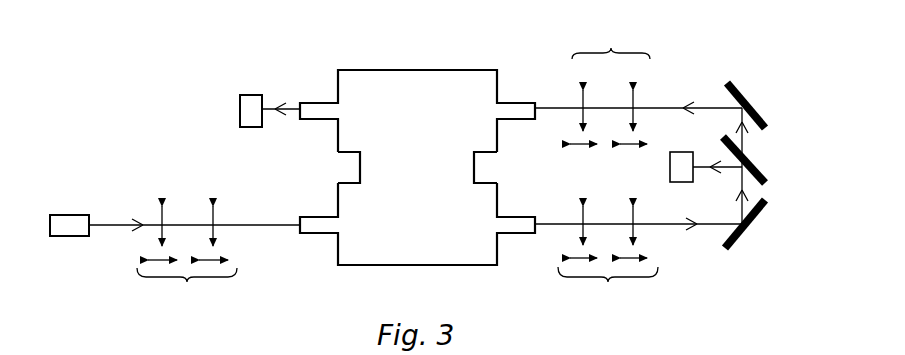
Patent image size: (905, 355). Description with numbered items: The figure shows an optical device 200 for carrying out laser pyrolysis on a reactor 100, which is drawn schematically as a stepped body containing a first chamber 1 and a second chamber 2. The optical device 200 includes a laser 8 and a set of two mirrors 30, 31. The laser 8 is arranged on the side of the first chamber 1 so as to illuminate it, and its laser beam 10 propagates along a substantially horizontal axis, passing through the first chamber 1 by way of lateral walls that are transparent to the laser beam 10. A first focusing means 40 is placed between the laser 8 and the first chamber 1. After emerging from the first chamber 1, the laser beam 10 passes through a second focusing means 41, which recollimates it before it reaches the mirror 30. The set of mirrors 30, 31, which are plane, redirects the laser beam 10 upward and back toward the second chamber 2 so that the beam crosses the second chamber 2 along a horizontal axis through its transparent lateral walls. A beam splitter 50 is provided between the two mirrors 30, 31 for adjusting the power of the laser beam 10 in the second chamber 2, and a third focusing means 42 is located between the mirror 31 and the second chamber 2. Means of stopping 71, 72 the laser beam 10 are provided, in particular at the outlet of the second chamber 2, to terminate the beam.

The first chamber 1 is at (479, 246).
The second chamber 2 is at (440, 91).
The laser 8 is at (73, 212).
The laser beam 10 is at (259, 232).
The mirror 30 is at (754, 237).
The mirror 31 is at (764, 108).
The first focusing means 40 is at (187, 242).
The second focusing means 41 is at (608, 242).
The third focusing means 42 is at (610, 85).
The beam splitter 50 is at (764, 163).
The means of stopping the laser beam 71 is at (680, 149).
The means of stopping the laser beam 72 is at (250, 94).
The reactor 100 is at (412, 159).
The optical device 200 is at (698, 257).